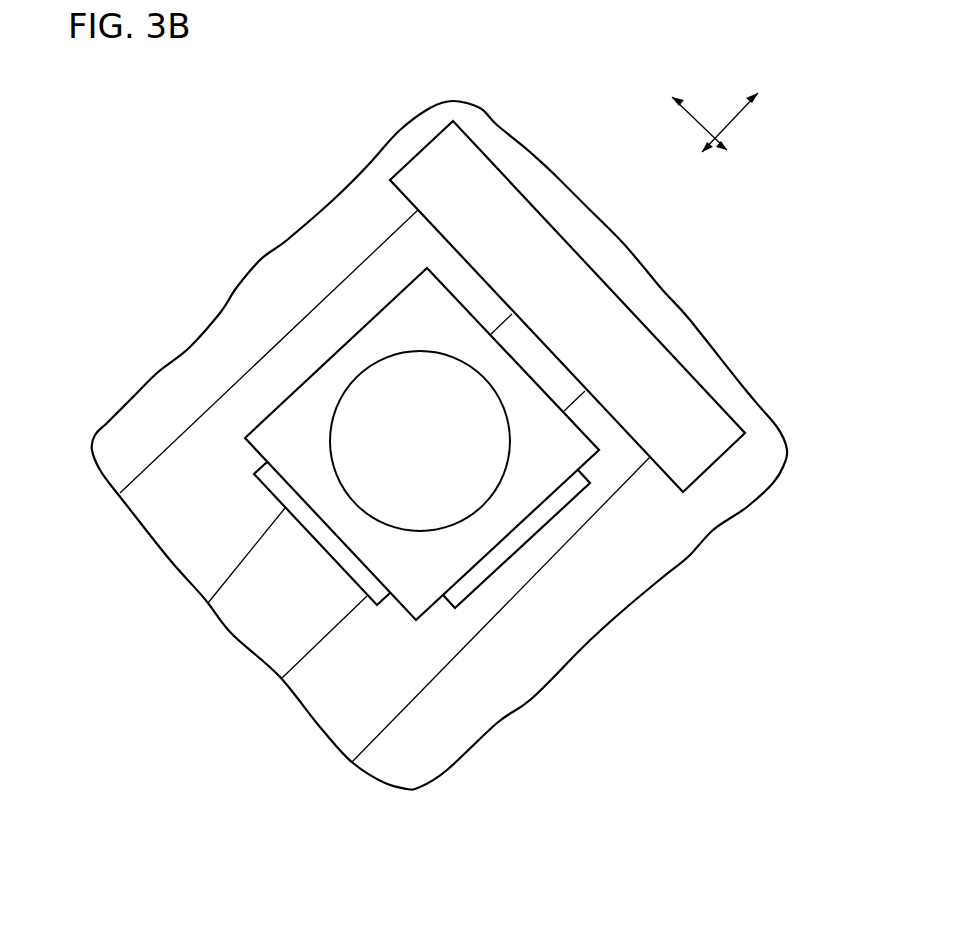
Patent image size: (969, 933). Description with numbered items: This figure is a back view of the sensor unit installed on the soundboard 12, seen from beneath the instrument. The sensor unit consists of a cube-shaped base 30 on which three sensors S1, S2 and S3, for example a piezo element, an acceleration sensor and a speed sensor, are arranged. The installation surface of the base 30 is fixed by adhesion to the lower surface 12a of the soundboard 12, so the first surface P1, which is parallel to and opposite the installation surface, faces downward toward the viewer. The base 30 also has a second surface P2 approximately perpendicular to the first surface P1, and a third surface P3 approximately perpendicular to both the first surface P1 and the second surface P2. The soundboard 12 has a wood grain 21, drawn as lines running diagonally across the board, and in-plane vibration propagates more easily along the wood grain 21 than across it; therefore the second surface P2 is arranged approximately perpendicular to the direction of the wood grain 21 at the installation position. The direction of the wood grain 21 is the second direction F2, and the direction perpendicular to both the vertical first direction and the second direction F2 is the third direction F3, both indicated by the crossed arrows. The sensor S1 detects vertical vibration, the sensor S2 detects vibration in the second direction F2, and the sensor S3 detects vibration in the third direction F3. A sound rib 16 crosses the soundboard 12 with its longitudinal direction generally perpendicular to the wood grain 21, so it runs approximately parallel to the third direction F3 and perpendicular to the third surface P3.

The soundboard 12 is at (335, 243).
The lower surface of the soundboard 12a is at (622, 458).
The sound rib 16 is at (467, 168).
The base 30 is at (427, 265).
The wood grain 21 is at (260, 535).
The sensor S1 is at (483, 402).
The first surface P1 is at (538, 408).
The sensor S2 is at (310, 537).
The second surface P2 is at (338, 542).
The sensor S3 is at (523, 548).
The third surface P3 is at (590, 470).
The second direction F2 is at (731, 125).
The third direction F3 is at (700, 125).